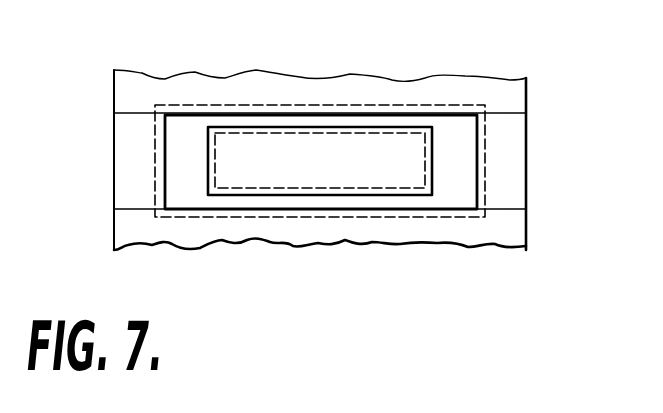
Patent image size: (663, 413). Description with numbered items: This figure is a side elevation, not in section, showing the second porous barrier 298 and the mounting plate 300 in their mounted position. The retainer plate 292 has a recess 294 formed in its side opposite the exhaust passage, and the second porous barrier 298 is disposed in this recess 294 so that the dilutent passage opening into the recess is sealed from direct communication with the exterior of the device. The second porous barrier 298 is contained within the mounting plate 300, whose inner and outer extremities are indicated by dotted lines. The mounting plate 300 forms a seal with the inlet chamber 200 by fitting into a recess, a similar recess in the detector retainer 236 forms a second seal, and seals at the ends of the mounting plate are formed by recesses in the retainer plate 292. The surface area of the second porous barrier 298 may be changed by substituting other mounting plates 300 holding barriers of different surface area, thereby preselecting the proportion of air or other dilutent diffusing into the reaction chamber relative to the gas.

The inlet chamber 200 is at (332, 80).
The detector retainer 236 is at (438, 233).
The retainer plate 292 is at (508, 155).
The recess 294 is at (178, 151).
The second porous wall or barrier 298 is at (232, 157).
The mounting plate 300 is at (460, 140).